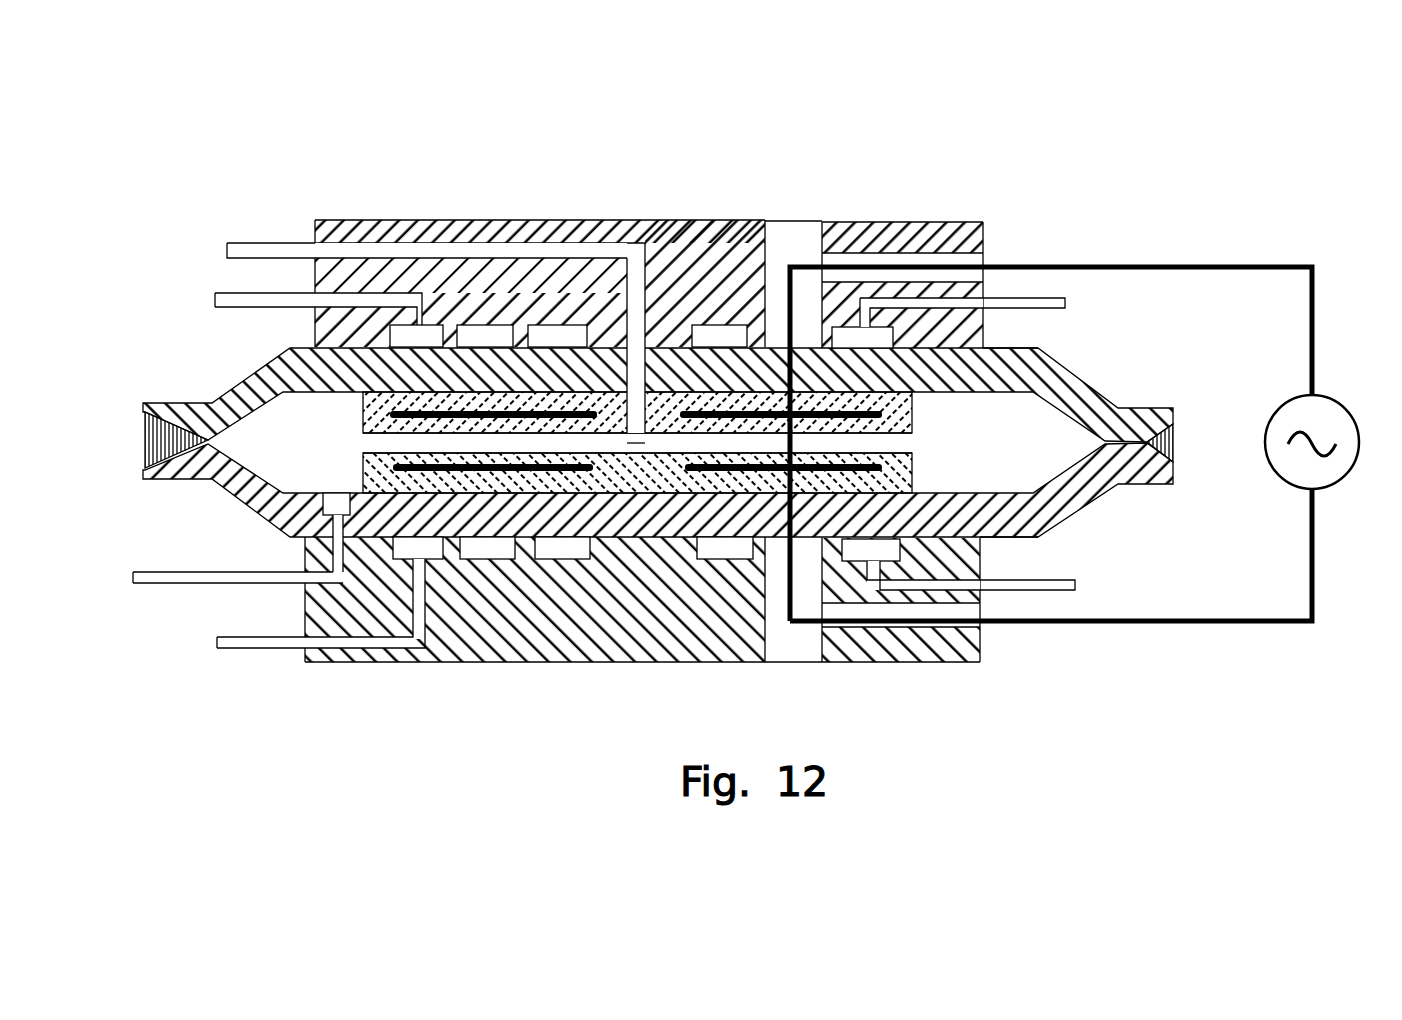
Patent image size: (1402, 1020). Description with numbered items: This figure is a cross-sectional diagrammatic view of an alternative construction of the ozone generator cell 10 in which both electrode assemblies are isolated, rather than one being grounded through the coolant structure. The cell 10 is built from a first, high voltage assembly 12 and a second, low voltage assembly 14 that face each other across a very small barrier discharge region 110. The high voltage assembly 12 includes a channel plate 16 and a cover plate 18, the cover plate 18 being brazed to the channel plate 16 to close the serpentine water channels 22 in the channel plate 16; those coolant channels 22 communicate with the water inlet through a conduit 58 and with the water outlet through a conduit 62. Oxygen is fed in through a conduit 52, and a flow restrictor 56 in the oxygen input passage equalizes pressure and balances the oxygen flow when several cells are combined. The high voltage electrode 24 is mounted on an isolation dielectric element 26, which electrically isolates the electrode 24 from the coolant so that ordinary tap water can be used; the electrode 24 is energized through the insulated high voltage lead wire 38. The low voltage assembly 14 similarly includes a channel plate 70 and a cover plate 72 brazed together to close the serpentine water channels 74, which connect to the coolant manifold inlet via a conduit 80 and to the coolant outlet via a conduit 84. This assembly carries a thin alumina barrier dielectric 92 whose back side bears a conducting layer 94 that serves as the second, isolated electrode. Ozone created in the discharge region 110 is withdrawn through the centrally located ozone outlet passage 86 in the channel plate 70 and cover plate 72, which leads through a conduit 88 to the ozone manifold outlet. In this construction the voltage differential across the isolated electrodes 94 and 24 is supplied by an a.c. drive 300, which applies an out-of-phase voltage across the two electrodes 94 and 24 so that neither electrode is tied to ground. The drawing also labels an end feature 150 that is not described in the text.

The ozone generator cell 10 is at (868, 109).
The high voltage assembly 12 is at (1135, 514).
The low voltage assembly 14 is at (1135, 374).
The channel plate 16 is at (937, 663).
The cover plate 18 is at (1013, 538).
The serpentine water channels 22 is at (560, 556).
The high voltage electrode 24 is at (912, 460).
The isolation dielectric element 26 is at (912, 484).
The insulated high voltage lead wire 38 is at (1160, 622).
The conduit 52 is at (185, 585).
The flow restrictor 56 is at (330, 492).
The conduit 58 is at (243, 650).
The conduit 62 is at (1078, 585).
The channel plate 70 is at (985, 232).
The cover plate 72 is at (1010, 350).
The serpentine water channels 74 is at (553, 332).
The conduit 80 is at (250, 308).
The conduit 84 is at (1068, 303).
The ozone outlet passage 86 is at (638, 286).
The conduit 88 is at (280, 242).
The barrier dielectric 92 is at (912, 411).
The conducting layer 94 is at (912, 443).
The barrier discharge region 110 is at (633, 443).
The outlet orifice 150 is at (143, 440).
The a.c. drive 300 is at (1337, 406).